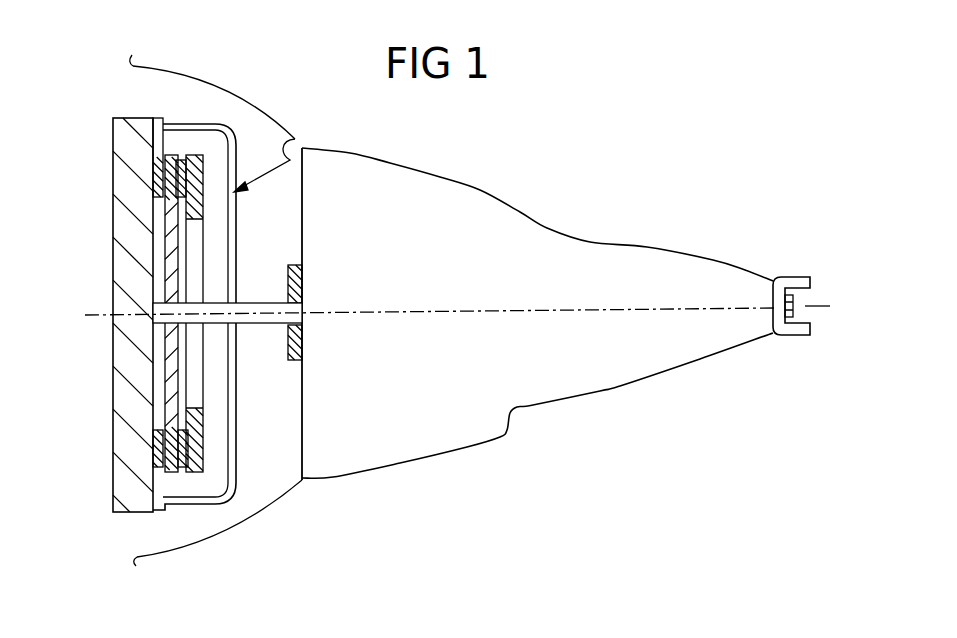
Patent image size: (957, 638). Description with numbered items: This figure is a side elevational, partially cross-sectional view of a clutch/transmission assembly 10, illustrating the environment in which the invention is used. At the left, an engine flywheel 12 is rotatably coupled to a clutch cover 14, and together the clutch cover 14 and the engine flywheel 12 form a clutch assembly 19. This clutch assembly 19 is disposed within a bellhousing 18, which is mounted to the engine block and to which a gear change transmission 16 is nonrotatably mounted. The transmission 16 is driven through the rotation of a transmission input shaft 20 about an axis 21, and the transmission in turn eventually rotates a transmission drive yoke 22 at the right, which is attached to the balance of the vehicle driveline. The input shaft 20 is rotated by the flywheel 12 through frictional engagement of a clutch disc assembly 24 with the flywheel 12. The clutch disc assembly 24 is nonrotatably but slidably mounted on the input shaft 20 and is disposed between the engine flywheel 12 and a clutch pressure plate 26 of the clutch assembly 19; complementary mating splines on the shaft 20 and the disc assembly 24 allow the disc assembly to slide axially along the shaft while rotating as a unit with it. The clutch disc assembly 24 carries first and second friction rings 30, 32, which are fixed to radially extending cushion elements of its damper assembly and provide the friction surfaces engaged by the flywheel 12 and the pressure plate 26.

The clutch/transmission assembly 10 is at (513, 160).
The engine flywheel 12 is at (132, 157).
The clutch cover 14 is at (232, 498).
The gear change transmission 16 is at (537, 247).
The bellhousing 18 is at (137, 557).
The clutch assembly 19 is at (297, 140).
The transmission input shaft 20 is at (153, 318).
The axis 21 is at (818, 310).
The transmission drive yoke 22 is at (803, 277).
The clutch disc assembly 24 is at (182, 473).
The clutch pressure plate 26 is at (200, 167).
The first friction ring 30 is at (158, 155).
The second friction ring 32 is at (185, 158).